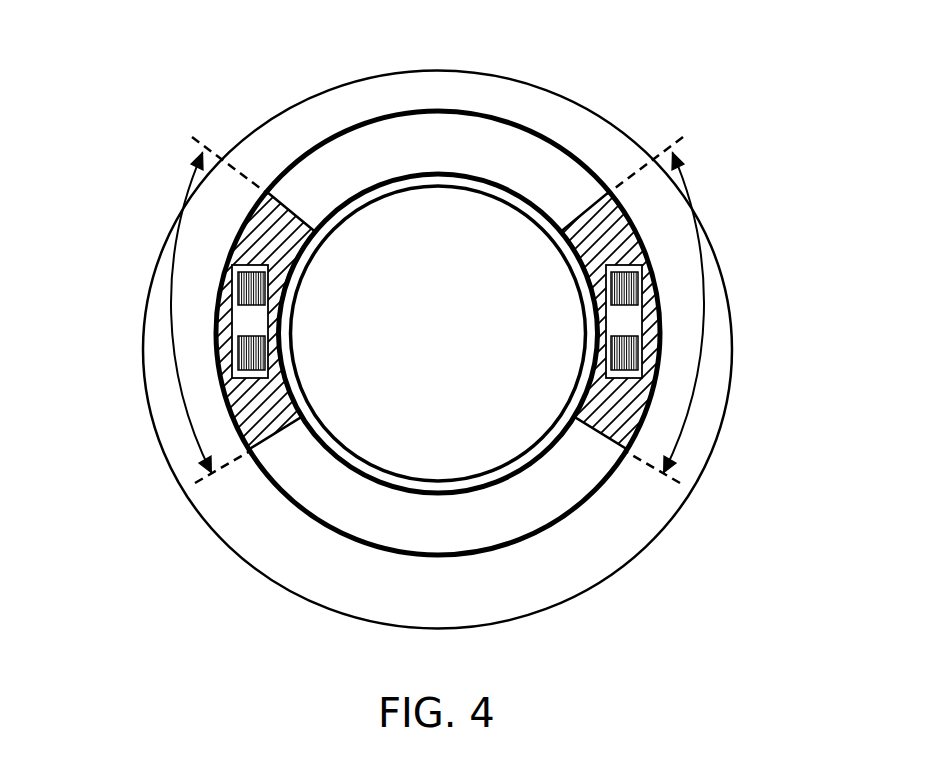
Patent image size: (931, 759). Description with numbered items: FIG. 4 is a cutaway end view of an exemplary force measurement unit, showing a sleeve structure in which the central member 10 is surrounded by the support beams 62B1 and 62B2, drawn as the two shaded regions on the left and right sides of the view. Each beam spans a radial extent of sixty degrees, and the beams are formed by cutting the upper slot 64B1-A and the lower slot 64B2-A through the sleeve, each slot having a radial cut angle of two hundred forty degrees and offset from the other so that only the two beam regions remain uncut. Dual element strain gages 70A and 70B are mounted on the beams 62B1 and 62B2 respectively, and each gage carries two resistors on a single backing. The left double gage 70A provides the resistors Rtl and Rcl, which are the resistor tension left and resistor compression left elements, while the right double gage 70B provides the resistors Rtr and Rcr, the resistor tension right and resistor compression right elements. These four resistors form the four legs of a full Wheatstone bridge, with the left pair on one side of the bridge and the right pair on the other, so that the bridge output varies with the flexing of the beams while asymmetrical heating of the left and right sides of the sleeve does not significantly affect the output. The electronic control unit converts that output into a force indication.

The tubular body 10 is at (316, 424).
The support beam 62B1 is at (263, 400).
The support beam 62B2 is at (612, 400).
The upper slot 64B1-A is at (356, 84).
The lower slot 64B2-A is at (243, 548).
The dual element strain gage 70A is at (169, 298).
The dual element strain gage 70B is at (709, 298).
The Resistor Tension Left Rtl is at (253, 287).
The Resistor Compression Left Rcl is at (253, 347).
The Resistor Tension Right Rtr is at (632, 290).
The Resistor Compression Right Rcr is at (622, 347).